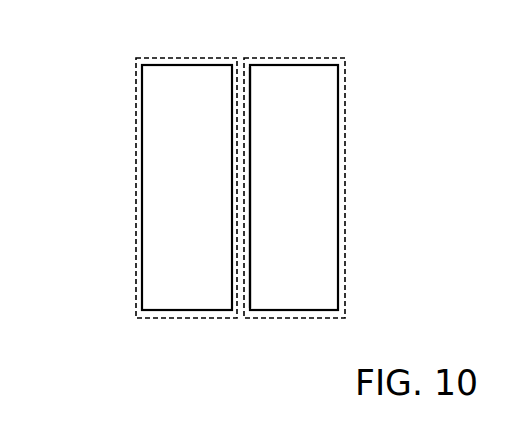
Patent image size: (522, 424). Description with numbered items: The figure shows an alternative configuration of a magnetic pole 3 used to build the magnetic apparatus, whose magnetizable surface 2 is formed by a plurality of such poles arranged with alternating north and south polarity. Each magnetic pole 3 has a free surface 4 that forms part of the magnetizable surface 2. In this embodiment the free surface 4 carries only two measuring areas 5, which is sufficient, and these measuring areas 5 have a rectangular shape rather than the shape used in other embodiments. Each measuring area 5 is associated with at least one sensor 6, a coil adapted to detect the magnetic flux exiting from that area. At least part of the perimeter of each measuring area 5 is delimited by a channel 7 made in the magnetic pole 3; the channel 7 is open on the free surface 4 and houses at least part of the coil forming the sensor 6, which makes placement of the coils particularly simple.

The magnetizable surface 2 is at (182, 148).
The magnetic pole 3 is at (340, 184).
The free surface 4 is at (302, 257).
The measuring area 5 is at (187, 65).
The sensor 6 is at (135, 192).
The channel 7 is at (250, 187).